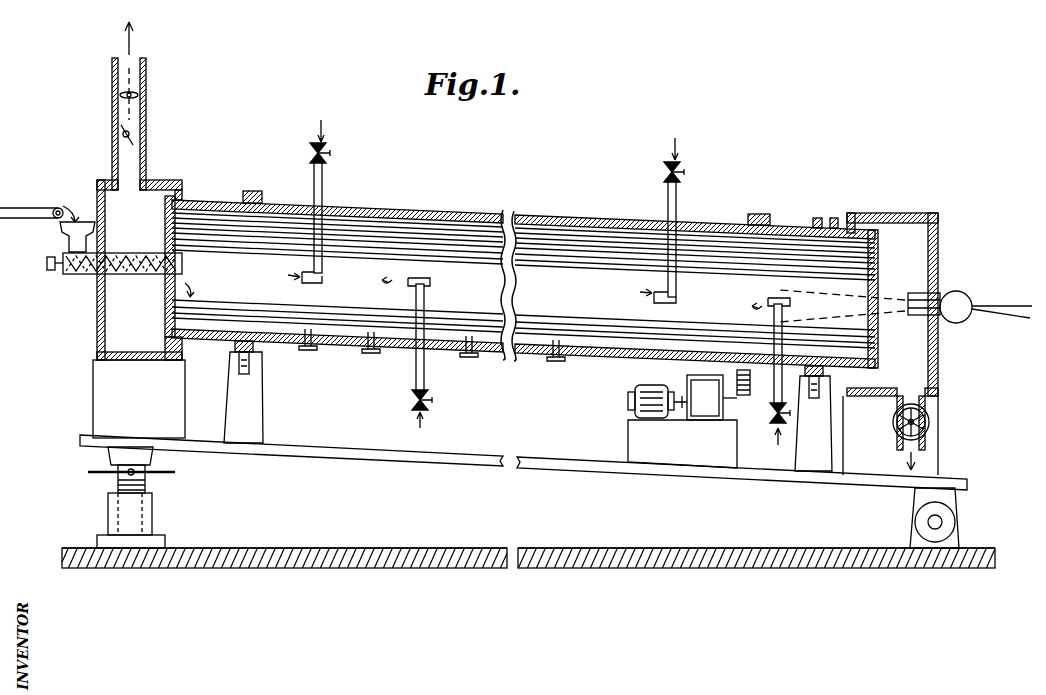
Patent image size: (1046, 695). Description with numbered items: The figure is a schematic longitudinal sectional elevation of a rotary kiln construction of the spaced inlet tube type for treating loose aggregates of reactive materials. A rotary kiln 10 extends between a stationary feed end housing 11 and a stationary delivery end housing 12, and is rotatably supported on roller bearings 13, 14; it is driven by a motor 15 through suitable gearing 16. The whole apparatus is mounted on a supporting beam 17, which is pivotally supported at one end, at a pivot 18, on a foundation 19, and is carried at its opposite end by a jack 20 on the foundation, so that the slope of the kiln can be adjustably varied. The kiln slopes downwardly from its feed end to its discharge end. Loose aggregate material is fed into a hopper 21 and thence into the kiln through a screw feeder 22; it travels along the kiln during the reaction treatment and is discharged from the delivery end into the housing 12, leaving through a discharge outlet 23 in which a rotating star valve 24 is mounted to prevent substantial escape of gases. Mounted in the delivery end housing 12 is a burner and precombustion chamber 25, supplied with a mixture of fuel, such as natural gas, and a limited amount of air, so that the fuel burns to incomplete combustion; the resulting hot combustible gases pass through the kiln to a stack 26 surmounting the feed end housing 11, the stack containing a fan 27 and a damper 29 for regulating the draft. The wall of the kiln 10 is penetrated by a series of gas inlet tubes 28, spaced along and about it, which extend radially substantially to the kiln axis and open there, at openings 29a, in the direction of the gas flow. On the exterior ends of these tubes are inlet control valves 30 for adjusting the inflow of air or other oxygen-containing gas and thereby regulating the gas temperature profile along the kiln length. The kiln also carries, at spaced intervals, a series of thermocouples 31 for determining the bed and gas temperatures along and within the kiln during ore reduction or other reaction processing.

The rotary kiln 10 is at (518, 213).
The feed end housing 11 is at (97, 291).
The delivery end housing 12 is at (884, 214).
The roller bearing 13 is at (250, 437).
The roller bearing 14 is at (810, 468).
The motor 15 is at (635, 395).
The gearing 16 is at (742, 395).
The supporting beam 17 is at (412, 465).
The pivot 18 is at (928, 523).
The foundation 19 is at (504, 547).
The jack 20 is at (152, 511).
The hopper 21 is at (62, 233).
The screw feeder 22 is at (122, 253).
The discharge outlet 23 is at (920, 412).
The rotating star valve 24 is at (915, 423).
The burner and precombustion chamber 25 is at (952, 292).
The stack 26 is at (112, 76).
The fan 27 is at (136, 93).
The gas inlet tubes 28 is at (322, 278).
The damper 29 is at (123, 132).
The tube openings 29a is at (501, 290).
The inlet control valves 30 is at (310, 153).
The thermocouples 31 is at (370, 345).